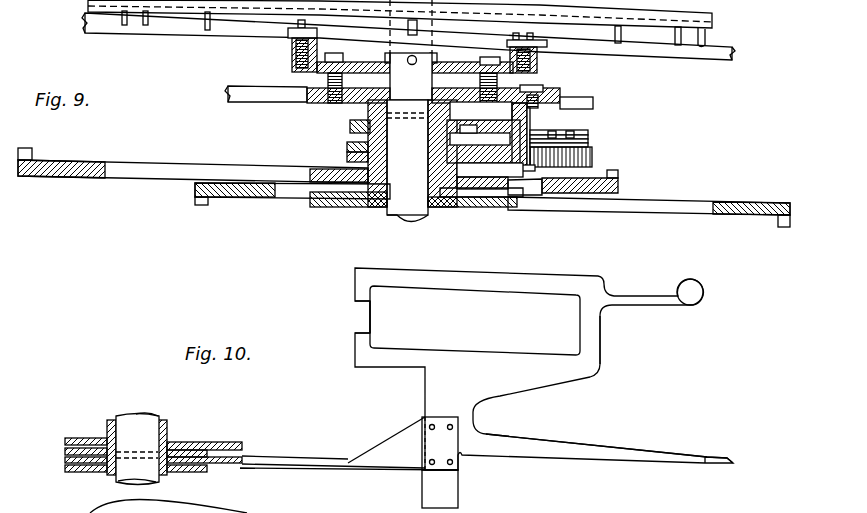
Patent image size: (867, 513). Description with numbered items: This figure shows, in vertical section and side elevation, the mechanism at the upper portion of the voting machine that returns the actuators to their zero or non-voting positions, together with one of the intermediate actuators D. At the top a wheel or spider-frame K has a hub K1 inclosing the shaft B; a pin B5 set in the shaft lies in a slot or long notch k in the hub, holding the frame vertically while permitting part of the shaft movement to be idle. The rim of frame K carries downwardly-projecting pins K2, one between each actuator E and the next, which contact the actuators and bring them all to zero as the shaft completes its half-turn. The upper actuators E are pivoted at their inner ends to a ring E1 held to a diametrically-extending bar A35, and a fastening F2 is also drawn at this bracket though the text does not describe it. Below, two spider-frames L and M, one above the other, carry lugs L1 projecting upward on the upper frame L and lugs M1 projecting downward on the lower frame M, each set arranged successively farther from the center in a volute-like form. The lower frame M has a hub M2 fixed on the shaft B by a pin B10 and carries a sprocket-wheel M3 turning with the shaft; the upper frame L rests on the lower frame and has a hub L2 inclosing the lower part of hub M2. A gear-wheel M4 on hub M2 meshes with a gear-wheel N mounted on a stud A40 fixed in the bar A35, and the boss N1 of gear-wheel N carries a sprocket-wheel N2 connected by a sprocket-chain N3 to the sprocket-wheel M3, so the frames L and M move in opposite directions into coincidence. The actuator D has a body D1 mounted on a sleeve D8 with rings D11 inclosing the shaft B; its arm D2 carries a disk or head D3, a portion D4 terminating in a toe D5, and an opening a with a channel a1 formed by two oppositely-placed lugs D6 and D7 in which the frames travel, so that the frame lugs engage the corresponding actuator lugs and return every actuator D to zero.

In FIG. 9, the wheel or spider-frame K is at (712, 21).
In FIG. 9, the downwardly-projecting pins K2 is at (208, 30).
In FIG. 9, the hub K1 is at (422, 31).
In FIG. 9, the slot or long notch k is at (439, 53).
In FIG. 9, the actuator E is at (166, 32).
In FIG. 9, the ring E1 is at (292, 57).
In FIG. 9, the bolt F2 is at (334, 53).
In FIG. 9, the pin B5 is at (412, 65).
In FIG. 9, the pin B10 is at (370, 110).
In FIG. 9, the diametrically-extending bar A35 is at (280, 102).
In FIG. 9, the stud A40 is at (528, 117).
In FIG. 9, the shaft B is at (407, 161).
In FIG. 10, the shaft B is at (118, 406).
In FIG. 9, the hub M2 is at (378, 207).
In FIG. 9, the sprocket-wheel N2 is at (490, 110).
In FIG. 9, the boss N1 is at (550, 126).
In FIG. 9, the sprocket-chain N3 is at (590, 135).
In FIG. 9, the gear-wheel N is at (592, 152).
In FIG. 9, the sprocket-wheel M3 is at (350, 127).
In FIG. 9, the gear-wheel M4 is at (347, 146).
In FIG. 9, the hub L2 is at (347, 158).
In FIG. 9, the upper spider-frame L is at (264, 163).
In FIG. 9, the lugs L1 is at (32, 153).
In FIG. 9, the lower spider-frame M is at (258, 197).
In FIG. 9, the lugs M1 is at (197, 205).
In FIG. 10, the actuator D is at (486, 369).
In FIG. 10, the opening a is at (475, 320).
In FIG. 10, the slot a' a1 is at (360, 317).
In FIG. 10, the lug D6 is at (354, 299).
In FIG. 10, the lug D7 is at (354, 334).
In FIG. 10, the disk or head D3 is at (703, 292).
In FIG. 10, the arm D2 is at (600, 357).
In FIG. 10, the portion D4 is at (598, 433).
In FIG. 10, the toe D5 is at (712, 453).
In FIG. 10, the body D1 is at (292, 453).
In FIG. 10, the sleeve D8 is at (167, 423).
In FIG. 10, the rings D11 is at (167, 476).